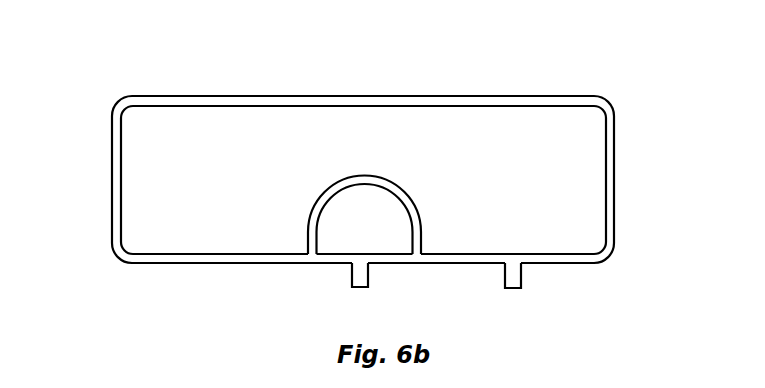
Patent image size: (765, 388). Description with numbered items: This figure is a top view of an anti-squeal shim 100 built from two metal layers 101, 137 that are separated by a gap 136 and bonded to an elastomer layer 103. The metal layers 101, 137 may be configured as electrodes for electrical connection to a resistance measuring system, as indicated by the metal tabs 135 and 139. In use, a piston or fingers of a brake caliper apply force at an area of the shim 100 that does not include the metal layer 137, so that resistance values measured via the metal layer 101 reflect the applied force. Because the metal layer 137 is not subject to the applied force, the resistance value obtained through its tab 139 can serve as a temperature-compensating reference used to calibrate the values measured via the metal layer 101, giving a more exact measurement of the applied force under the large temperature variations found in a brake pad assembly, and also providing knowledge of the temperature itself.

The anti-squeal shim 100 is at (326, 178).
The metal layer 101 is at (121, 136).
The elastomer layer 103 is at (112, 204).
The metal tab 135 is at (521, 279).
The gap 136 is at (312, 257).
The metal layer 137 is at (334, 256).
The metal tab 139 is at (369, 284).